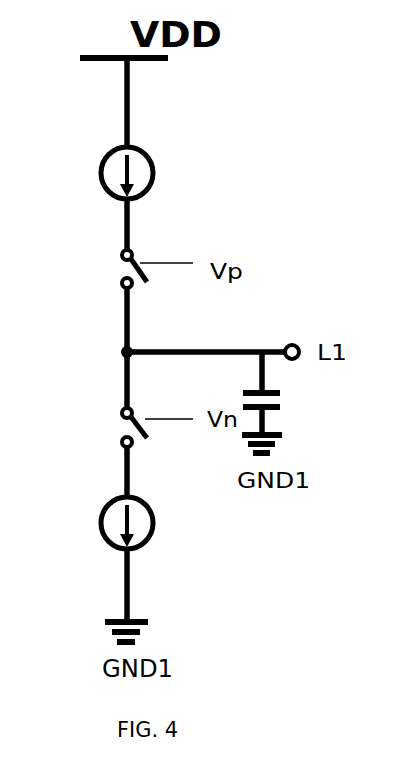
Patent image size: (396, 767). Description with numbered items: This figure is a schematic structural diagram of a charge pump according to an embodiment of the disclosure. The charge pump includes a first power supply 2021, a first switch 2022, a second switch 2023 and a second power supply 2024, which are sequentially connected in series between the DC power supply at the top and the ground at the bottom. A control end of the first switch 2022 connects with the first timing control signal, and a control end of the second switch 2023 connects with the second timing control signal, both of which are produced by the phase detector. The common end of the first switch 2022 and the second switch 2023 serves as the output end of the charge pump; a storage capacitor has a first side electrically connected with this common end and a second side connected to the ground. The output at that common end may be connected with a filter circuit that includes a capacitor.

The first power supply 2021 is at (160, 172).
The first switch 2022 is at (118, 290).
The second switch 2023 is at (117, 447).
The second power supply 2024 is at (155, 513).